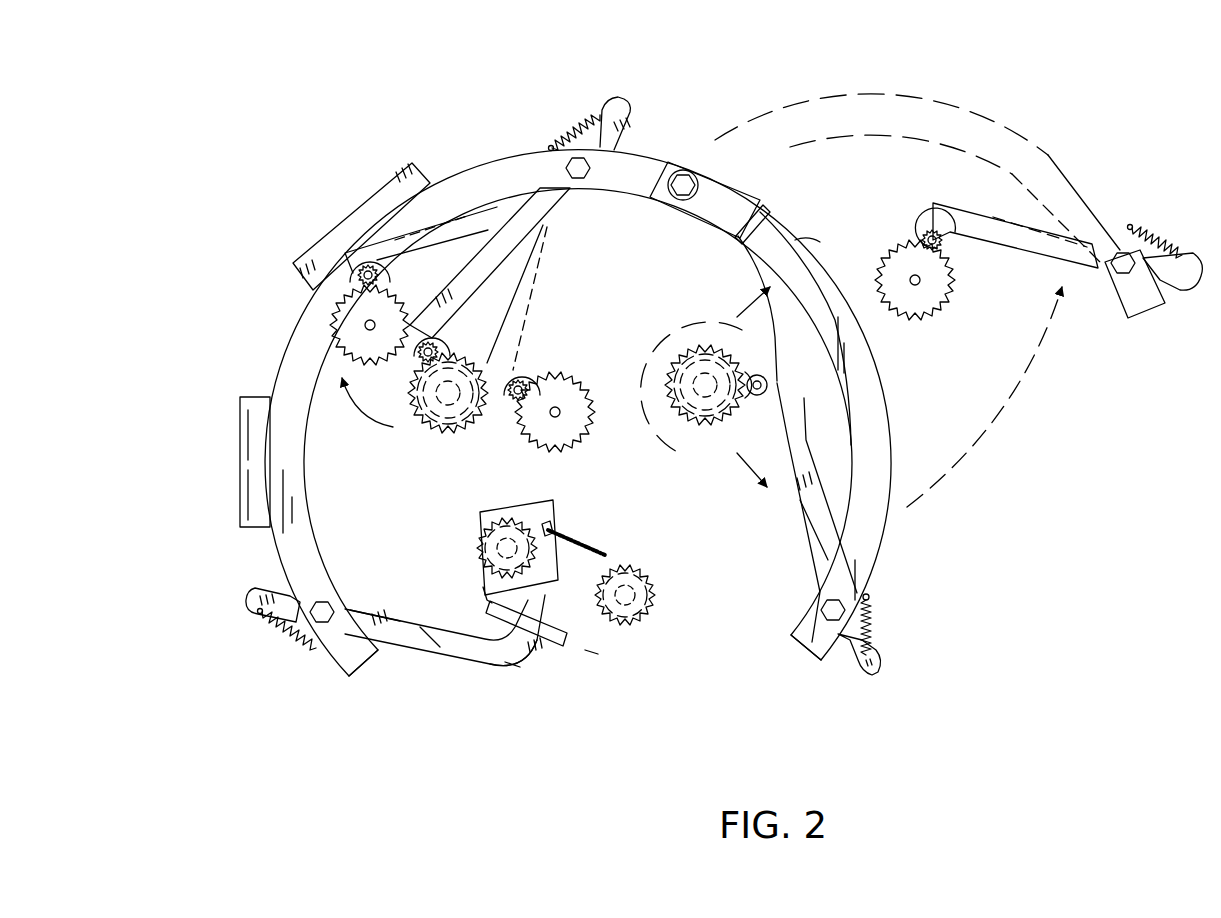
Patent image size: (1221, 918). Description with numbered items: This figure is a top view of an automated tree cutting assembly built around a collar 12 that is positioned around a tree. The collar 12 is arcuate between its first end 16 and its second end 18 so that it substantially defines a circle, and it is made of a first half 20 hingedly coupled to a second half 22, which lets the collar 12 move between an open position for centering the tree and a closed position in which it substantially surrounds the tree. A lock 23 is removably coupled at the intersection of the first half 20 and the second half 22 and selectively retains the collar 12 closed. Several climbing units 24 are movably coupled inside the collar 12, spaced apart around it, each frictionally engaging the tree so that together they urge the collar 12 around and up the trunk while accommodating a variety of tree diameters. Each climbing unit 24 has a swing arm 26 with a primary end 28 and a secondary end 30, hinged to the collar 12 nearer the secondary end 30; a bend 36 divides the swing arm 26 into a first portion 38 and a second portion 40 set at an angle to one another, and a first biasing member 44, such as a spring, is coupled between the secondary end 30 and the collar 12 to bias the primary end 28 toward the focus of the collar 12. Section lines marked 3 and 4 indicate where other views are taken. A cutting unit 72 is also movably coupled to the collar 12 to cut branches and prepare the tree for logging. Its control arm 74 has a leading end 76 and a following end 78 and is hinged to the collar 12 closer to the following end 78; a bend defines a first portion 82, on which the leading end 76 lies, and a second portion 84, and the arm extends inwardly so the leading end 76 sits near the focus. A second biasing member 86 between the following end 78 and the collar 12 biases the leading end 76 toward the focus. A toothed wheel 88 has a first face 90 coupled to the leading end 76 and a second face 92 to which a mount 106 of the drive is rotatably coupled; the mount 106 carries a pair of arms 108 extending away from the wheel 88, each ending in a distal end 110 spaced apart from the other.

The collar 12 is at (520, 150).
The first end 16 is at (800, 650).
The second end 18 is at (370, 673).
The first half 20 is at (645, 147).
The second half 22 is at (813, 233).
The lock 23 is at (686, 180).
The climbing unit 24 is at (457, 247).
The swing arm 26 is at (820, 522).
The primary end 28 is at (745, 378).
The secondary end 30 is at (868, 672).
The bend 36 is at (780, 355).
The first portion 38 is at (813, 238).
The second portion 40 is at (814, 490).
The first biasing member 44 is at (870, 630).
The section line 3- 3 is at (668, 440).
The section line 4- 4 is at (436, 580).
The cutting unit 72 is at (533, 682).
The control arm 74 is at (407, 650).
The leading end 76 is at (553, 649).
The following end 78 is at (250, 600).
The first portion 82 is at (513, 669).
The second portion 84 is at (385, 612).
The second biasing member 86 is at (290, 628).
The wheel 88 is at (492, 632).
The first face 90 is at (440, 648).
The second face 92 is at (560, 596).
The mount 106 is at (592, 628).
The arms 108 is at (645, 580).
The distal end 110 is at (462, 556).